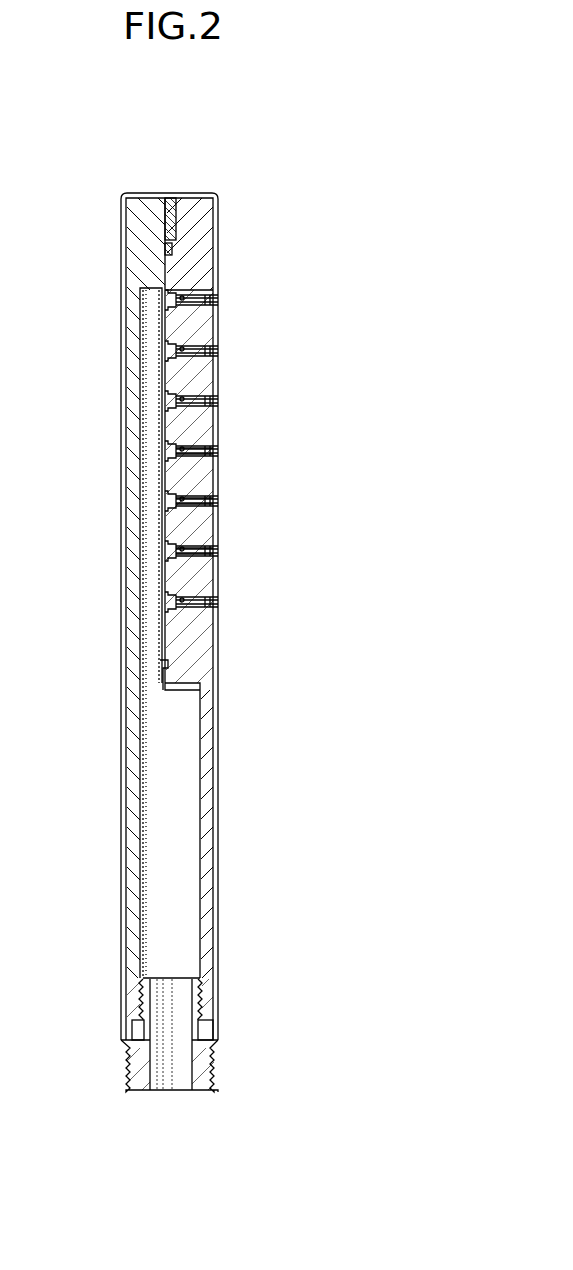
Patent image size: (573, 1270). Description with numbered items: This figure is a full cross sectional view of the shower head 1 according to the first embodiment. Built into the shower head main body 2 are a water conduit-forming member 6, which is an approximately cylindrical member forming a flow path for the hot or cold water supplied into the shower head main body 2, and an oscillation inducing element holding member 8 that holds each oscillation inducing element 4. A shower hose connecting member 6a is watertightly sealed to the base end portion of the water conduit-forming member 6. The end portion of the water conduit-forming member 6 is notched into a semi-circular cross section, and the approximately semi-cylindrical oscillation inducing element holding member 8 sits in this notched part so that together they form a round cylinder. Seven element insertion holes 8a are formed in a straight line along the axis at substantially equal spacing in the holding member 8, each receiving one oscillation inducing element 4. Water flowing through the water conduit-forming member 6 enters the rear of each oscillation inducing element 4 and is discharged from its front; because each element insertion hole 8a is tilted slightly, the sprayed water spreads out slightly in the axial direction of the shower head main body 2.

The sensor device 1 is at (250, 183).
The shower head main body 2 is at (221, 239).
The oscillation inducing element 4 is at (215, 318).
The water conduit-forming member 6 is at (136, 786).
The shower hose connecting member 6a is at (131, 1068).
The oscillation inducing element holding member 8 is at (207, 652).
The element insertion hole 8a is at (214, 453).